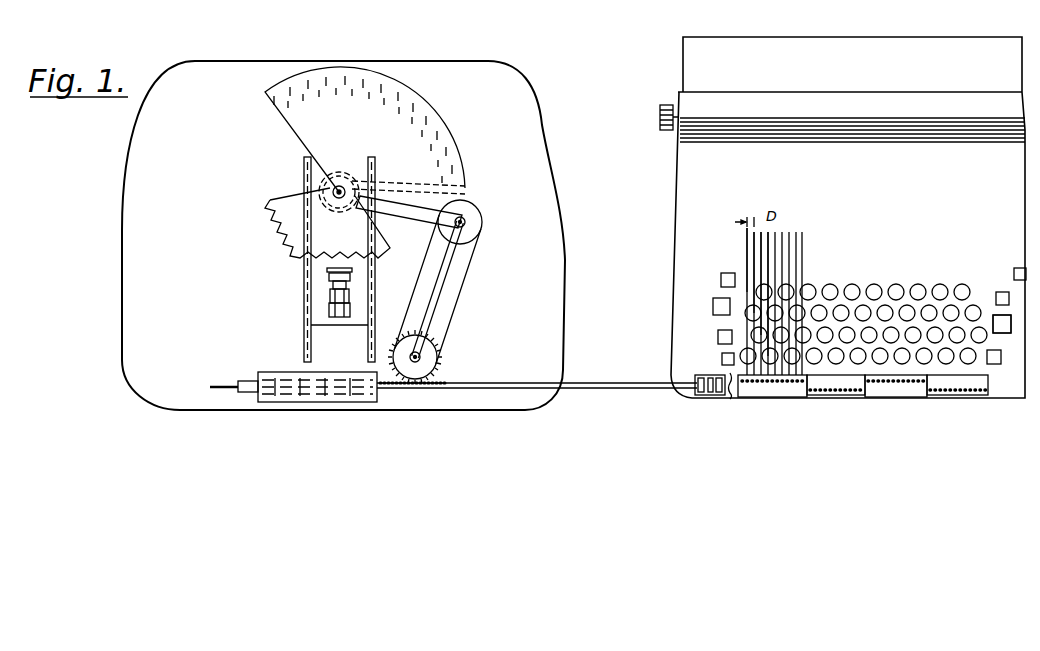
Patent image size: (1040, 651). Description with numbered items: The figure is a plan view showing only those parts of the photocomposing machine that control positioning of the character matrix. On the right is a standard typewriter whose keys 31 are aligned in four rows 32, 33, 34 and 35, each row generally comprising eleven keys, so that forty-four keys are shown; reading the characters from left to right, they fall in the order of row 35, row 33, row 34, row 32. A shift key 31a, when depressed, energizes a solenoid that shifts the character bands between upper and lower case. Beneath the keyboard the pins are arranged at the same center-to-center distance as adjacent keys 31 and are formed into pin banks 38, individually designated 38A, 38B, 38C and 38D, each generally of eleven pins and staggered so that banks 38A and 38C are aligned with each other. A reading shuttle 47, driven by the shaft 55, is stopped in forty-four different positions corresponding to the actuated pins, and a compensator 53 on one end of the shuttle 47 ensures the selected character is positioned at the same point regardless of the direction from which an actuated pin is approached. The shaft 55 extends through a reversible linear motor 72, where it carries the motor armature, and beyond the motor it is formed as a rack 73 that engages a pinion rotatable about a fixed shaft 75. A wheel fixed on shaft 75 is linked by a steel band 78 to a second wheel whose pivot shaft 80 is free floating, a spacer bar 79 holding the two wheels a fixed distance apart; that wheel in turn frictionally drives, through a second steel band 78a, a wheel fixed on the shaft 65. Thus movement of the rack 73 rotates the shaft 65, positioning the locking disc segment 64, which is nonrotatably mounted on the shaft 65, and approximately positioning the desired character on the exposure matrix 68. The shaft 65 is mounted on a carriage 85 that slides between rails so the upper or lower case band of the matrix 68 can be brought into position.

The keys 31 is at (877, 284).
The shift key 31a is at (998, 320).
The key row 32 is at (740, 292).
The key row 33 is at (740, 317).
The key row 34 is at (748, 344).
The key row 35 is at (740, 354).
The pin banks 38 is at (855, 421).
The pin bank 38A is at (742, 396).
The pin bank 38B is at (865, 395).
The pin bank 38C is at (912, 385).
The pin bank 38D is at (990, 396).
The reading shuttle 47 is at (702, 378).
The compensator 53 is at (688, 395).
The shaft 55 is at (583, 379).
The locking disc segment 64 is at (356, 248).
The shaft 65 is at (322, 184).
The character exposure matrix 68 is at (378, 138).
The reversible linear motor 72 is at (297, 398).
The rack 73 is at (440, 380).
The fixed shaft 75 is at (428, 355).
The steel band 78 is at (462, 302).
The second steel band 78a is at (462, 194).
The spacer bar 79 is at (448, 280).
The pivot shaft 80 is at (466, 222).
The carriage 85 is at (318, 290).